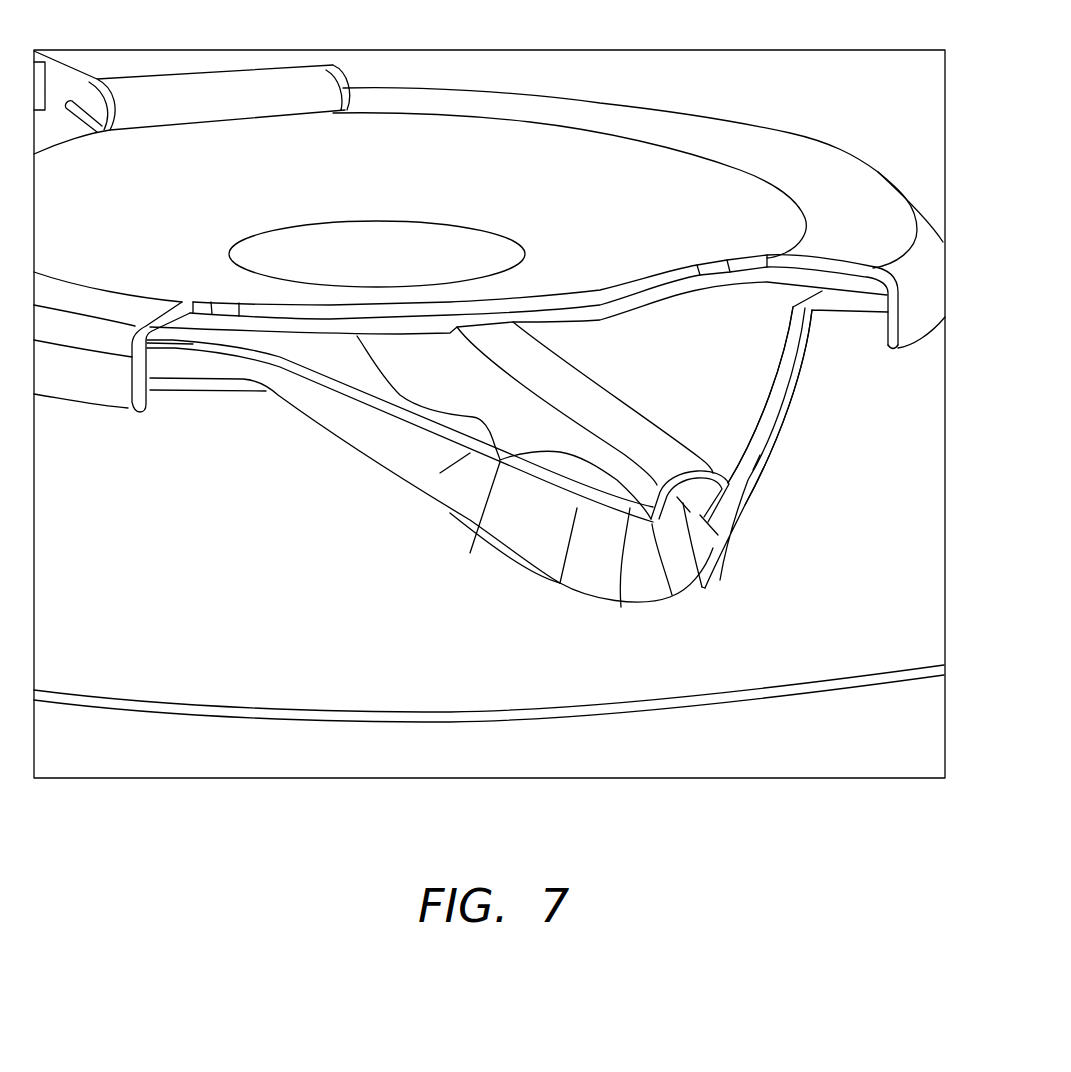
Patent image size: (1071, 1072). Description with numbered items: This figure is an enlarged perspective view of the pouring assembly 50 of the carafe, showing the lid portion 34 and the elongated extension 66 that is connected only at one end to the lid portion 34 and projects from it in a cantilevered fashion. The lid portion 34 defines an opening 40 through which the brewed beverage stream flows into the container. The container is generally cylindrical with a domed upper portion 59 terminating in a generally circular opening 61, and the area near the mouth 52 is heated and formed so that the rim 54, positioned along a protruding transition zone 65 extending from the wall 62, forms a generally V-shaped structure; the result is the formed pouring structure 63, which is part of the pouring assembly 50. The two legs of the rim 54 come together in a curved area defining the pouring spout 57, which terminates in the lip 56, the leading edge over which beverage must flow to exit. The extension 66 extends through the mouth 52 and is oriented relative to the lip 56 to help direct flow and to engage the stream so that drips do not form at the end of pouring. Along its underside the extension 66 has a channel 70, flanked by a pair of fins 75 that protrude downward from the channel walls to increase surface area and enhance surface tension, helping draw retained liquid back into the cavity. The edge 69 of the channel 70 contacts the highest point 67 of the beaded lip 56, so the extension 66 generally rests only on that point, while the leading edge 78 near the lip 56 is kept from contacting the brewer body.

The lid portion 34 is at (793, 131).
The opening 40 is at (431, 247).
The pouring assembly 50 is at (277, 456).
The mouth 52 is at (737, 354).
The rim 54 is at (410, 421).
The lip 56 is at (621, 607).
The pouring spout 57 is at (608, 556).
The domed upper portion 59 is at (337, 658).
The opening 61 is at (192, 348).
The wall 62 is at (112, 683).
The pouring structure 63 is at (812, 457).
The transition zone 65 is at (440, 473).
The extension 66 is at (711, 457).
The highest point 67 is at (685, 517).
The edge 69 is at (683, 507).
The channel 70 is at (706, 588).
The fins 75 is at (470, 553).
The leading edge 78 is at (672, 595).